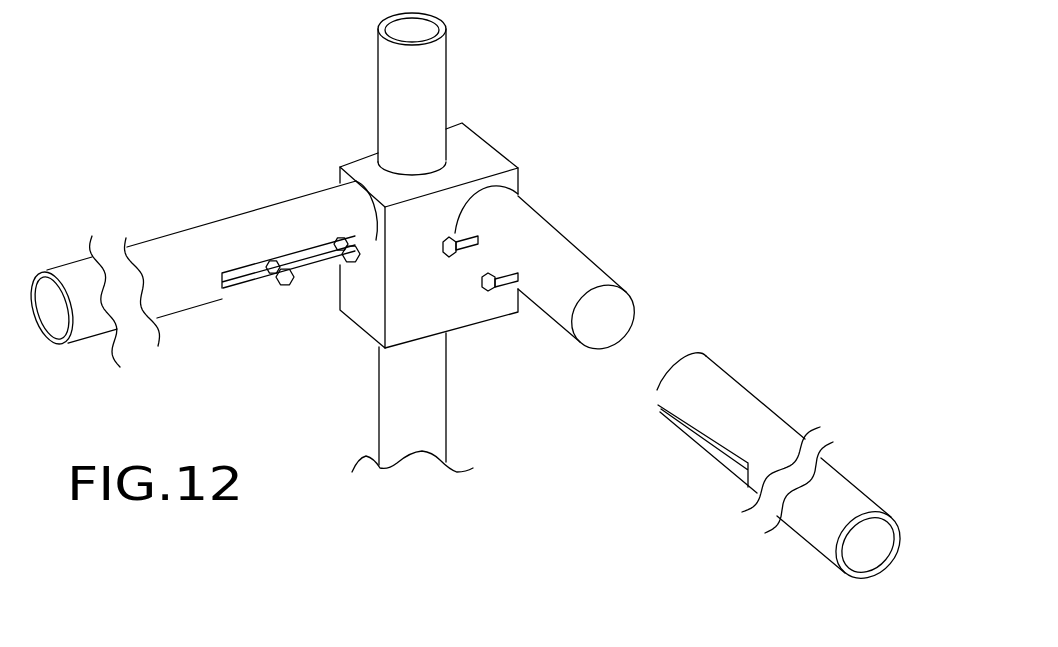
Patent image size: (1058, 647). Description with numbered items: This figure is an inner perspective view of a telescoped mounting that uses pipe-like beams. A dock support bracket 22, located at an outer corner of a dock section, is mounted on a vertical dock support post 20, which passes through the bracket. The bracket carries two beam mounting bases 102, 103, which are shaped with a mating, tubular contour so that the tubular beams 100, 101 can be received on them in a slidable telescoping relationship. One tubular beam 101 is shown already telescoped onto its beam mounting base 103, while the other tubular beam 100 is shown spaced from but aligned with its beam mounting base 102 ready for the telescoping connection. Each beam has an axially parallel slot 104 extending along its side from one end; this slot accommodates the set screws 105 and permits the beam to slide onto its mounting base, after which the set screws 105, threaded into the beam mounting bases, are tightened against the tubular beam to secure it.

The dock support post 20 is at (418, 97).
The dock support bracket 22 is at (512, 134).
The tubular beam 100 is at (719, 394).
The tubular beam 101 is at (190, 268).
The beam mounting base 102 is at (527, 240).
The beam mounting base 103 is at (253, 271).
The axially parallel slot 104 is at (213, 281).
The set screws 105 is at (291, 286).